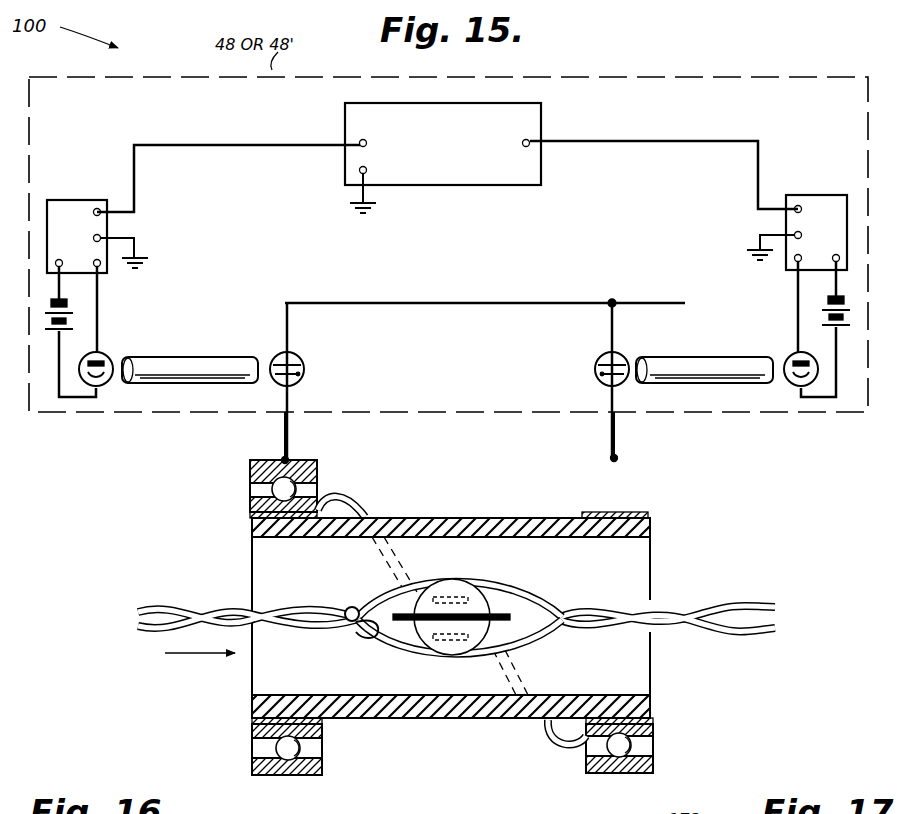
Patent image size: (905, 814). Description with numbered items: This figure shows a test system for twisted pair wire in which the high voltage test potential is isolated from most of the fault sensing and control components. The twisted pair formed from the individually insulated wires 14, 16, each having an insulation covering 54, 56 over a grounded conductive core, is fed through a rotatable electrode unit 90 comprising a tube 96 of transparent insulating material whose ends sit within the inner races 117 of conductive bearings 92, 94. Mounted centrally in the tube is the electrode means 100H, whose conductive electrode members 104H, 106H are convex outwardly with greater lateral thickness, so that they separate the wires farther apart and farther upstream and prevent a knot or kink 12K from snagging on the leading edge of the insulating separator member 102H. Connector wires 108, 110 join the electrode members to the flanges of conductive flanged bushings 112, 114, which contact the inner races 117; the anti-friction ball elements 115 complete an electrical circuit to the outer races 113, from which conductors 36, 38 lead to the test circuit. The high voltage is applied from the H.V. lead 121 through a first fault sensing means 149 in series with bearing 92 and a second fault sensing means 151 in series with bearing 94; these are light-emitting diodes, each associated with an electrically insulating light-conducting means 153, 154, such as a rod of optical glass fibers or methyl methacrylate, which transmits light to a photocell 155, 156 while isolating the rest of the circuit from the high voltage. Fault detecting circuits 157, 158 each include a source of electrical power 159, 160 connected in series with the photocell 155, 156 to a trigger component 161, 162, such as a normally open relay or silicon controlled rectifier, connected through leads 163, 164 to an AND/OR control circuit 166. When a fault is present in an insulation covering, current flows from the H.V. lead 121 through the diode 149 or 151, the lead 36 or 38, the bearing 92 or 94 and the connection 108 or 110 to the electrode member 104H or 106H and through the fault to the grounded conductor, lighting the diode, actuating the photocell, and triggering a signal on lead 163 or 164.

The lead 163 is at (228, 145).
The lead 164 is at (688, 140).
The AND/OR control circuit 166 is at (462, 190).
The trigger component 161 is at (68, 207).
The trigger component 162 is at (828, 195).
The fault detecting circuit 157 is at (203, 257).
The fault detecting circuit 158 is at (712, 240).
The source of electrical power 159 is at (70, 305).
The source of electrical power 160 is at (822, 302).
The photocell 155 is at (110, 348).
The photocell 156 is at (790, 350).
The electrically insulating light-conducting means 153 is at (205, 357).
The electrically insulating light-conducting means 154 is at (700, 335).
The first fault sensing means 149 is at (306, 360).
The second fault sensing means 151 is at (594, 360).
The H.V. lead 121 is at (638, 303).
The conductor 36 is at (288, 435).
The conductor 38 is at (617, 432).
The outer race 113 is at (250, 470).
The anti-friction ball element 115 is at (272, 487).
The inner race 117 is at (250, 505).
The conductive flanged bushing 112 is at (250, 514).
The connector wire 108 is at (345, 503).
The connector wire 110 is at (562, 748).
The electrode unit 90 is at (716, 527).
The tube 96 is at (408, 718).
The conductive flanged bushing 114 is at (653, 721).
The bearing 92 is at (250, 750).
The bearing 94 is at (672, 745).
The individually insulated wire 14 is at (752, 588).
The insulation covering 54 is at (778, 602).
The insulation covering 56 is at (778, 630).
The individually insulated wire 16 is at (752, 628).
The electrode means 100H is at (538, 588).
The insulating separator member 102H is at (500, 643).
The knot or kink 12K is at (330, 642).
The conductive electrode member 104H is at (462, 585).
The conductive electrode member 106H is at (455, 648).